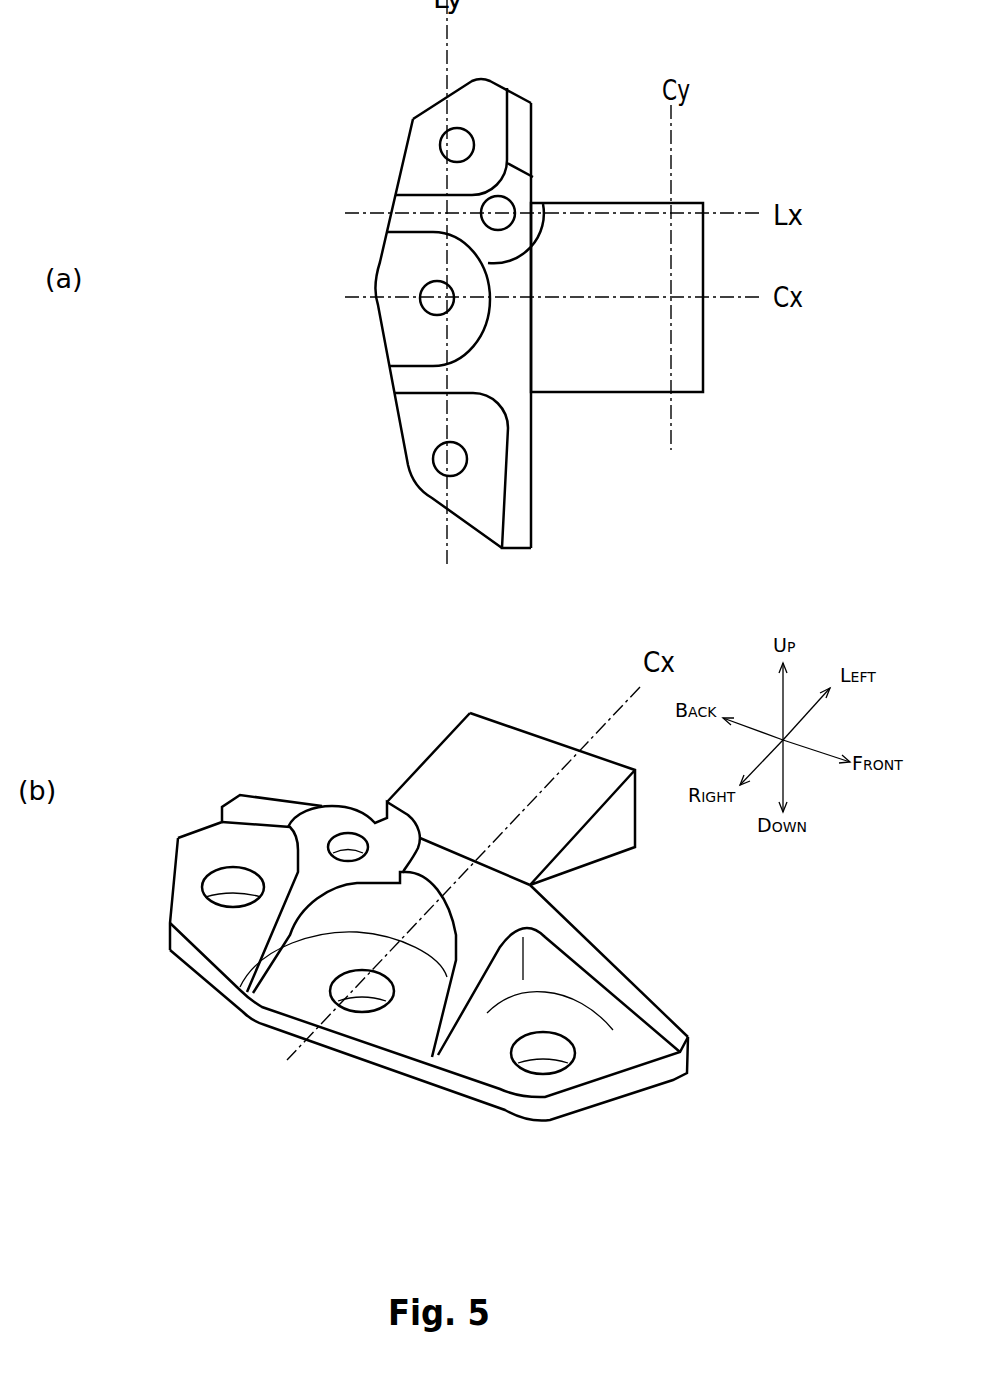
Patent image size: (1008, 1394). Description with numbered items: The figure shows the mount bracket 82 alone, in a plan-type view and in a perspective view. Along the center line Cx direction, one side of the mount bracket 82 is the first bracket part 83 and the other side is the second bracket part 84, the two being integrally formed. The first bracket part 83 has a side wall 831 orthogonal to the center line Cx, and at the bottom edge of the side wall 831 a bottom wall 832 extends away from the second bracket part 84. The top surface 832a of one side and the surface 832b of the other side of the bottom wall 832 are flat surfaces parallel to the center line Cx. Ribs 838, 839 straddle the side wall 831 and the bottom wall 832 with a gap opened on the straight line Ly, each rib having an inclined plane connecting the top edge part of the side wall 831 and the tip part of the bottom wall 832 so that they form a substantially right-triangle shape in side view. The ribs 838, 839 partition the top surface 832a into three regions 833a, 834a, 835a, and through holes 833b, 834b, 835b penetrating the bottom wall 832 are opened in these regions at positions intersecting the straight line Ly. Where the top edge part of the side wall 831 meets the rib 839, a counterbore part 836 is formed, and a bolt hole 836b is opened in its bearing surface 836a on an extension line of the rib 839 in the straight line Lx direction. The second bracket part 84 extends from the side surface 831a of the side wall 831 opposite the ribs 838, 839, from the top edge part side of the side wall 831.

The mount bracket 82 is at (712, 490).
The first bracket part 83 is at (532, 510).
The second bracket part 84 is at (634, 395).
The side wall 831 is at (512, 540).
The side surface 831a is at (532, 488).
The bottom wall 832 is at (472, 530).
The top surface 832a is at (218, 172).
The surface of the other side 832b is at (503, 1108).
The region 833a is at (410, 415).
The through hole 833b is at (450, 455).
The region 834a is at (397, 272).
The through hole 834b is at (440, 305).
The region 835a is at (408, 185).
The through hole 835b is at (458, 140).
The counterbore part 836 is at (535, 188).
The bearing surface 836a is at (515, 253).
The bolt hole 836b is at (500, 210).
The rib 838 is at (410, 367).
The rib 839 is at (398, 225).